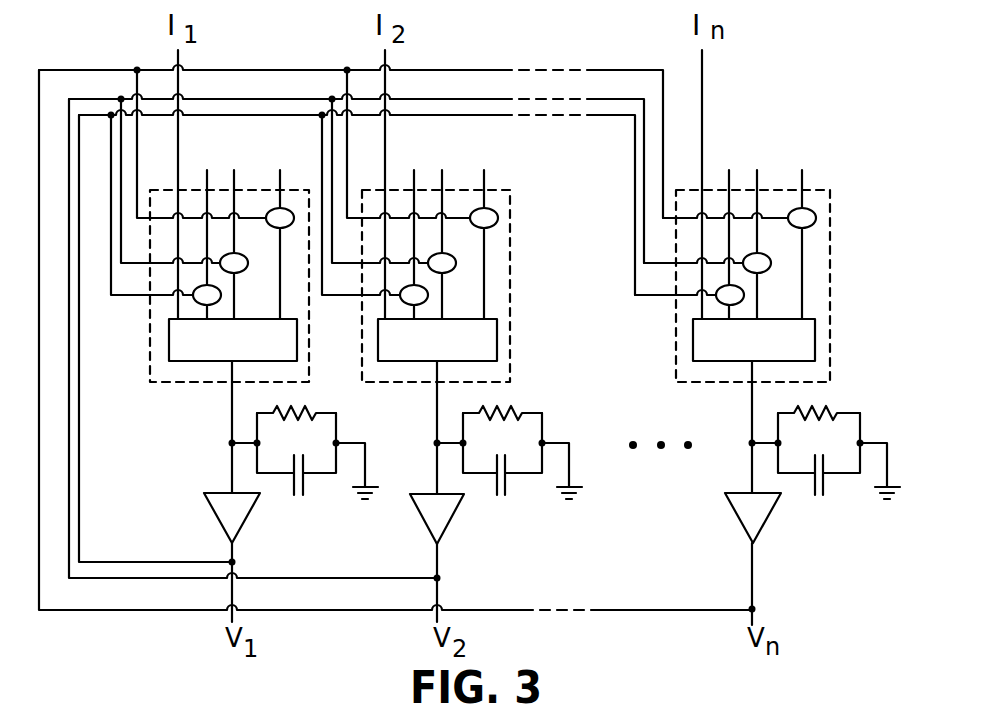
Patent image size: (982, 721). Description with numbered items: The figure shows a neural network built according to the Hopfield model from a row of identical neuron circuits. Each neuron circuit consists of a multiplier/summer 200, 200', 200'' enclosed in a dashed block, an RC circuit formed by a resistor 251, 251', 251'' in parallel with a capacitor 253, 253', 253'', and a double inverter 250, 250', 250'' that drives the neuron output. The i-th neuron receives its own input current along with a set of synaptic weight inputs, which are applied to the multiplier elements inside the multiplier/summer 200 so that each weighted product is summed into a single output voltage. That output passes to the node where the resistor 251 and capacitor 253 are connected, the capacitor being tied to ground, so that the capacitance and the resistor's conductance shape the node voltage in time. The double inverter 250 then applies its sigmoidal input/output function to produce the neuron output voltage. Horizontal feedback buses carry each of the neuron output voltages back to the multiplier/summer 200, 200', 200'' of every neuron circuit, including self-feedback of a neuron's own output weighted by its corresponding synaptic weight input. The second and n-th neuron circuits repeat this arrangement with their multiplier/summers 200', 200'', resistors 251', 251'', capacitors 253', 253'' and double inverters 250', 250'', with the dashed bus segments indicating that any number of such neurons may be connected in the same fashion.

The multiplier/summer 200 is at (203, 226).
The multiplier/summer 200' is at (408, 226).
The multiplier/summer 200'' is at (723, 255).
The resistor 251 is at (296, 401).
The resistor 251' is at (502, 397).
The resistor 251'' is at (819, 397).
The capacitor 253 is at (297, 454).
The capacitor 253' is at (503, 454).
The capacitor 253'' is at (819, 454).
The double inverter 250 is at (208, 518).
The double inverter 250' is at (413, 519).
The double inverter 250'' is at (725, 518).